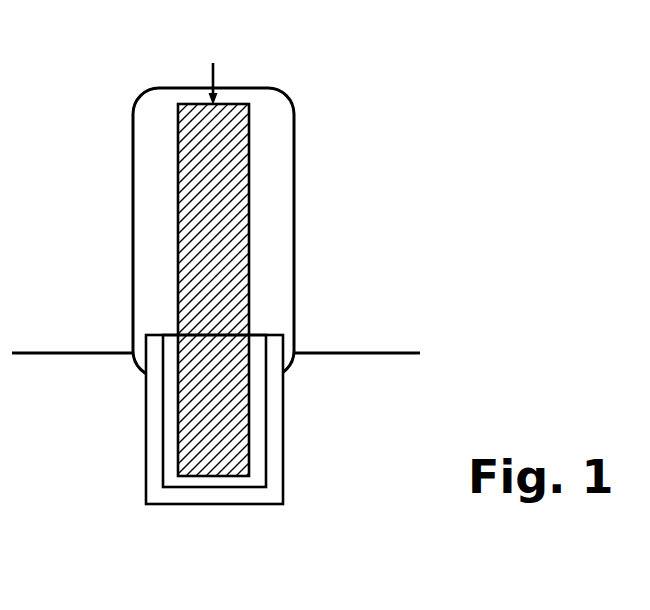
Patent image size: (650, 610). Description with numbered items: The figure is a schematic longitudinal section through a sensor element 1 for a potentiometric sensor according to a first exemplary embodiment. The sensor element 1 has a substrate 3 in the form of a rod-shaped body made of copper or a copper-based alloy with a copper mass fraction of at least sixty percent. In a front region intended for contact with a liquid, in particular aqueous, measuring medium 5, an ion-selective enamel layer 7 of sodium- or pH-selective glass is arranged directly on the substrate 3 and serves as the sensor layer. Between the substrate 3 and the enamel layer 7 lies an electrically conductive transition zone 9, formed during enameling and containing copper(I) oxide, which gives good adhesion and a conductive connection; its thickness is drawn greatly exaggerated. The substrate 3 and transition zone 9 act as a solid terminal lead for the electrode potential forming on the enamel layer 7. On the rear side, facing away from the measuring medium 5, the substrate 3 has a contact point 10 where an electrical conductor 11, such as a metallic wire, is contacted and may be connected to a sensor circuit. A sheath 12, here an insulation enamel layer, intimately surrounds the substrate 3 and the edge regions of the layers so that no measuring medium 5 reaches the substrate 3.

The sensor element 1 is at (346, 131).
The substrate 3 is at (232, 232).
The measuring medium 5 is at (390, 376).
The enamel layer 7 is at (270, 492).
The transition zone 9 is at (197, 480).
The contact point 10 is at (215, 101).
The electrical conductor 11 is at (213, 75).
The sheath 12 is at (148, 242).